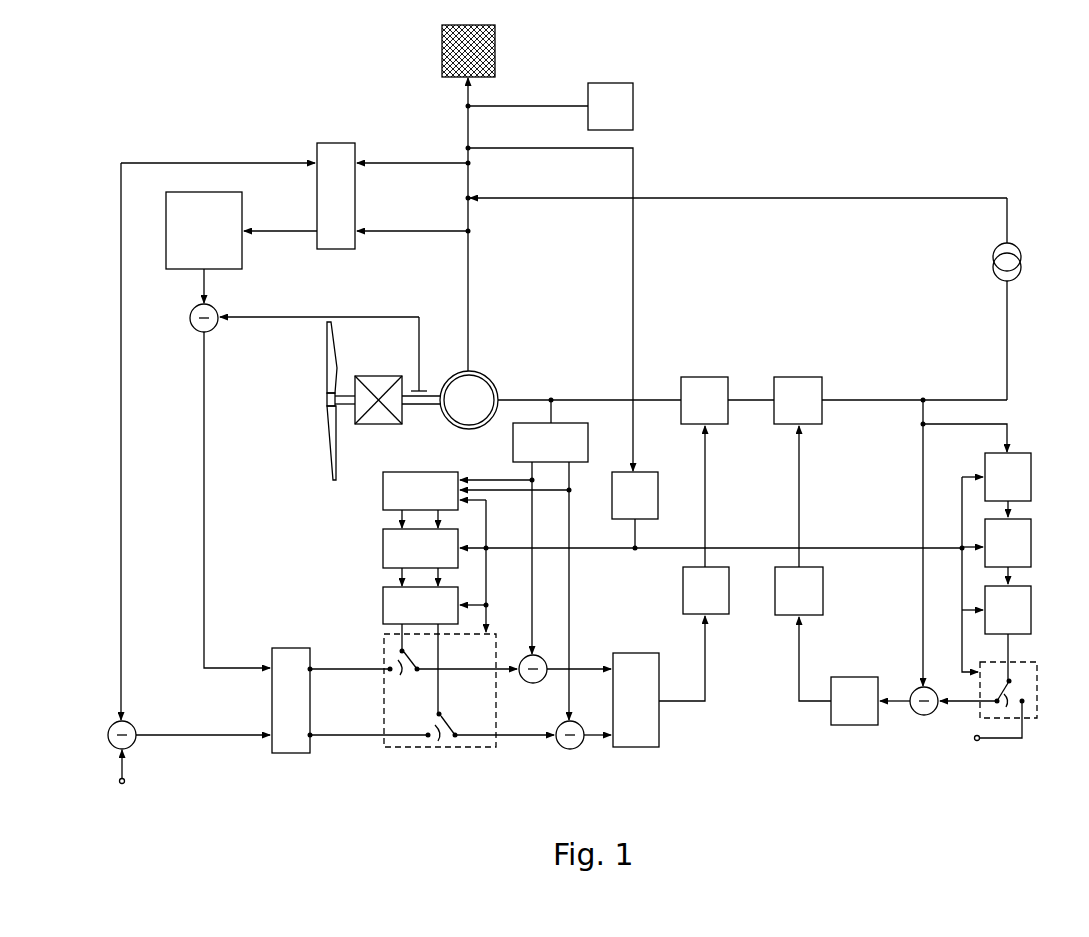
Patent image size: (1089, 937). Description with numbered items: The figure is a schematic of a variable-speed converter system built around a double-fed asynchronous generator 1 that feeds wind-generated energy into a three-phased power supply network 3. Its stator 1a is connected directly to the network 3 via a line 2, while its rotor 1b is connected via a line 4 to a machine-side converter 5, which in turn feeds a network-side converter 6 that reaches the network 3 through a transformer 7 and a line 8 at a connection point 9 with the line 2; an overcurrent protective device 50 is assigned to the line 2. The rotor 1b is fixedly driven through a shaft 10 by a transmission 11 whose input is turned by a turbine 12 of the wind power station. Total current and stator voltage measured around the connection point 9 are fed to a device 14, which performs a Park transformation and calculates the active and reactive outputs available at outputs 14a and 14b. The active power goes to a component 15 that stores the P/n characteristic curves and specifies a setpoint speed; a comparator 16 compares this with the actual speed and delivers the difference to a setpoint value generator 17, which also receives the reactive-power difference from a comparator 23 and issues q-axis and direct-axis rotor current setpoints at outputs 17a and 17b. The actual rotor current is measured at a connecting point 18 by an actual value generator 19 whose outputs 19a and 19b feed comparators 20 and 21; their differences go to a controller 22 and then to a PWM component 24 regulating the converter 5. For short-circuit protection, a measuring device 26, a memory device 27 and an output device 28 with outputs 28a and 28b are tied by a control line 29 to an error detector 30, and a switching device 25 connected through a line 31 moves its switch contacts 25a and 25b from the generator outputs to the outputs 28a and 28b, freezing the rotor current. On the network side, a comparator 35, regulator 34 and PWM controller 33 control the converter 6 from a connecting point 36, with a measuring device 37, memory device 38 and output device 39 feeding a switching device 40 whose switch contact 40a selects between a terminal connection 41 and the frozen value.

The asynchronous generator 1 is at (475, 400).
The stator 1a is at (493, 383).
The rotor 1b is at (456, 370).
The line 2 is at (468, 278).
The three-phased power supply network 3 is at (493, 39).
The line 4 is at (630, 394).
The machine-side converter 5 is at (702, 375).
The network-side converter 6 is at (797, 375).
The transformer 7 is at (1021, 265).
The line 8 is at (840, 195).
The connection point 9 is at (469, 197).
The shaft 10 is at (419, 408).
The transmission 11 is at (378, 418).
The turbine 12 is at (327, 425).
The device 14 is at (342, 158).
The output 14a is at (317, 237).
The output 14b is at (317, 155).
The component 15 is at (232, 258).
The comparator 16 is at (197, 326).
The setpoint value generator 17 is at (282, 655).
The output 17a is at (311, 668).
The output 17b is at (311, 736).
The connecting point 18 is at (553, 400).
The actual value generator 19 is at (581, 433).
The output 19a is at (531, 463).
The output 19b is at (570, 470).
The comparator 20 is at (538, 657).
The comparator 21 is at (572, 750).
The controller 22 is at (635, 662).
The comparator 23 is at (131, 726).
The PWM component 24 is at (720, 588).
The switching device 25 is at (417, 721).
The switch contact 25a is at (400, 650).
The switch contact 25b is at (447, 742).
The measuring device 26 is at (383, 492).
The memory device 27 is at (383, 543).
The output device 28 is at (383, 598).
The output 28a is at (401, 624).
The output 28b is at (487, 604).
The control line 29 is at (588, 548).
The error detector 30 is at (658, 497).
The line 31 is at (486, 540).
The PWM controller 33 is at (812, 578).
The regulator 34 is at (845, 718).
The comparator 35 is at (925, 715).
The connecting point 36 is at (925, 399).
The measuring device 37 is at (1025, 475).
The memory device 38 is at (1025, 541).
The output device 39 is at (1025, 606).
The switching device 40 is at (1020, 597).
The switch contact 40a is at (1010, 686).
The terminal connection 41 is at (978, 741).
The overcurrent protective device 50 is at (633, 103).